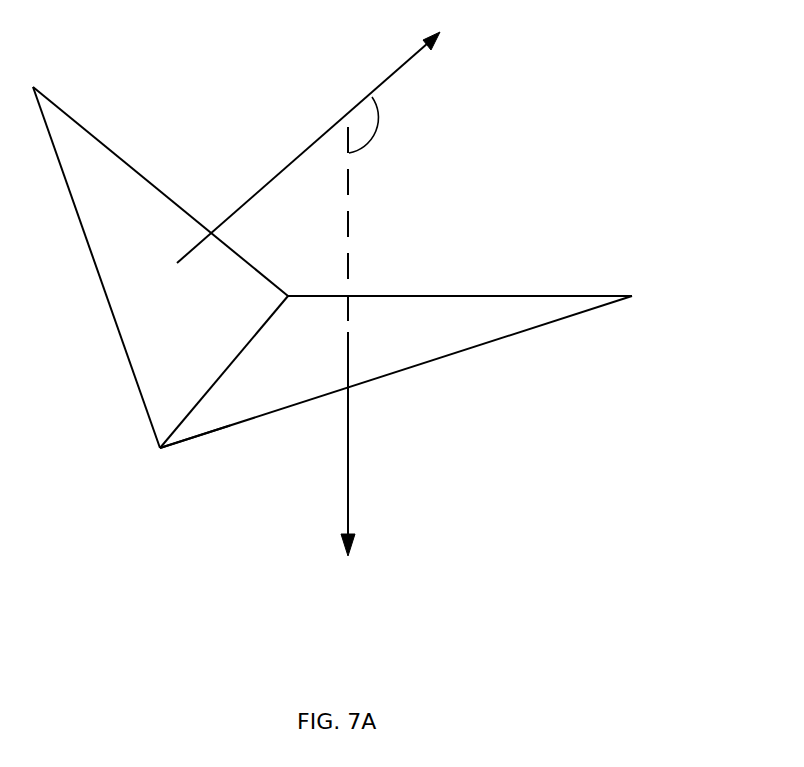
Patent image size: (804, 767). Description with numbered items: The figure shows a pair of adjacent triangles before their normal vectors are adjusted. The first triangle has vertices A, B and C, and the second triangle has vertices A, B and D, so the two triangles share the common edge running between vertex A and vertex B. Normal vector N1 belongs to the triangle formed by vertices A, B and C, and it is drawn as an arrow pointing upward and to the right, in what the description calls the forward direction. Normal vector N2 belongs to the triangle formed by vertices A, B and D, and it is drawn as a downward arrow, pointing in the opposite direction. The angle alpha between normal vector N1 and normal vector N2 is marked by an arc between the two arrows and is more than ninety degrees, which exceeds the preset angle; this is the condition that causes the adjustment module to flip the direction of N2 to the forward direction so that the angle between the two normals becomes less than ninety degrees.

The vertex A is at (181, 457).
The vertex B is at (396, 348).
The vertex C is at (152, 249).
The vertex D is at (414, 367).
The normal vector of triangle ABC N1 is at (324, 131).
The normal vector of triangle ABD N2 is at (345, 364).